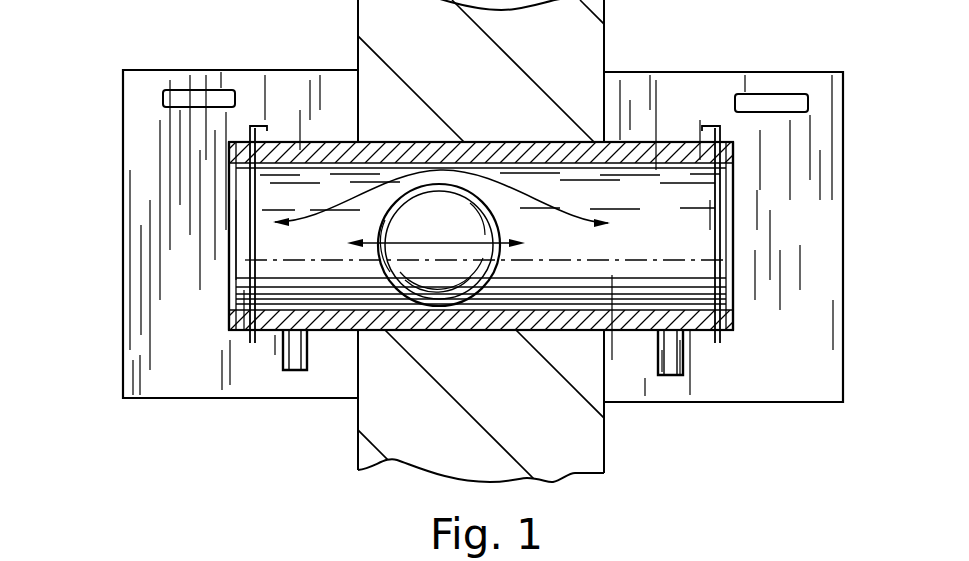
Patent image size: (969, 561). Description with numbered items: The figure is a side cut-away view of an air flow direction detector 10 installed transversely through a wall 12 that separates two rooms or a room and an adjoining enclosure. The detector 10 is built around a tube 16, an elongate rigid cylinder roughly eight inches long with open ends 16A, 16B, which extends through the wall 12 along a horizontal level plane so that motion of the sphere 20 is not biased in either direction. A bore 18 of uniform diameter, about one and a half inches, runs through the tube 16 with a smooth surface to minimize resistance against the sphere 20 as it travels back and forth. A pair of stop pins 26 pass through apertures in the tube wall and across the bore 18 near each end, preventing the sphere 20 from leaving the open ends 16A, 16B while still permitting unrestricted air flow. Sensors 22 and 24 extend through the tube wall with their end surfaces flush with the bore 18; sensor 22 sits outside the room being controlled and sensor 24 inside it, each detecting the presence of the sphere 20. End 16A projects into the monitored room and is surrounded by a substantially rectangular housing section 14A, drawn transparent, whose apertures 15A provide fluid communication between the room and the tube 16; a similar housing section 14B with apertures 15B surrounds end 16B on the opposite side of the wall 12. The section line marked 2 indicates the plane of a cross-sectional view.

The air flow direction detector 10 is at (96, 202).
The wall 12 is at (606, 50).
The housing section 14A is at (843, 73).
The housing section 14B is at (140, 398).
The aperture 15A is at (768, 94).
The aperture 15B is at (178, 90).
The tube 16 is at (321, 142).
The open end 16A is at (778, 313).
The open end 16B is at (216, 325).
The bore 18 is at (626, 176).
The sphere 20 is at (493, 275).
The sensor 22 is at (302, 372).
The sensor 24 is at (683, 376).
The stop pin 26 is at (248, 245).
The section line 2- 2 is at (275, 110).